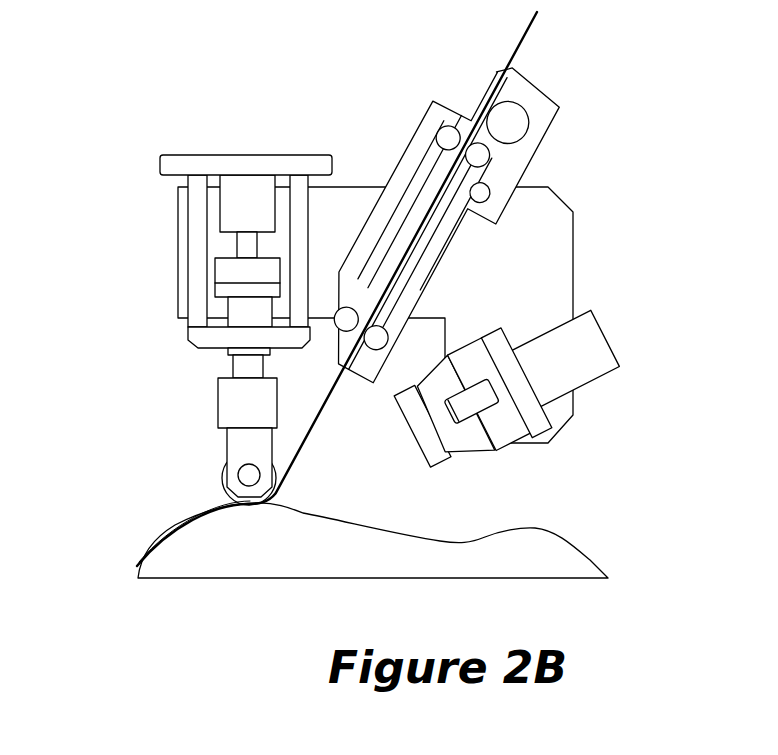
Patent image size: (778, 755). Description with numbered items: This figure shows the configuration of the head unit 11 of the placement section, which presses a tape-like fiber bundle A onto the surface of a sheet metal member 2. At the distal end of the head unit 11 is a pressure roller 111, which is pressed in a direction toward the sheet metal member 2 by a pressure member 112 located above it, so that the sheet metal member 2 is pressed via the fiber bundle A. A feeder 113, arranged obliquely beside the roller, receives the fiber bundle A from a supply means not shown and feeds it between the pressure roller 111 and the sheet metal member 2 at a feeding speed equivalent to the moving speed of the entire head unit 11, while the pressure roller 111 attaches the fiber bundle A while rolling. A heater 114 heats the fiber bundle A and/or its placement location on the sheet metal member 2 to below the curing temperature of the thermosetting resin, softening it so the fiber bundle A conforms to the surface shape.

The head unit 11 is at (213, 292).
The pressure roller 111 is at (222, 481).
The pressure member 112 is at (235, 275).
The feeder 113 is at (533, 100).
The heater 114 is at (477, 360).
The sheet metal member 2 is at (422, 550).
The fiber bundle A is at (148, 536).